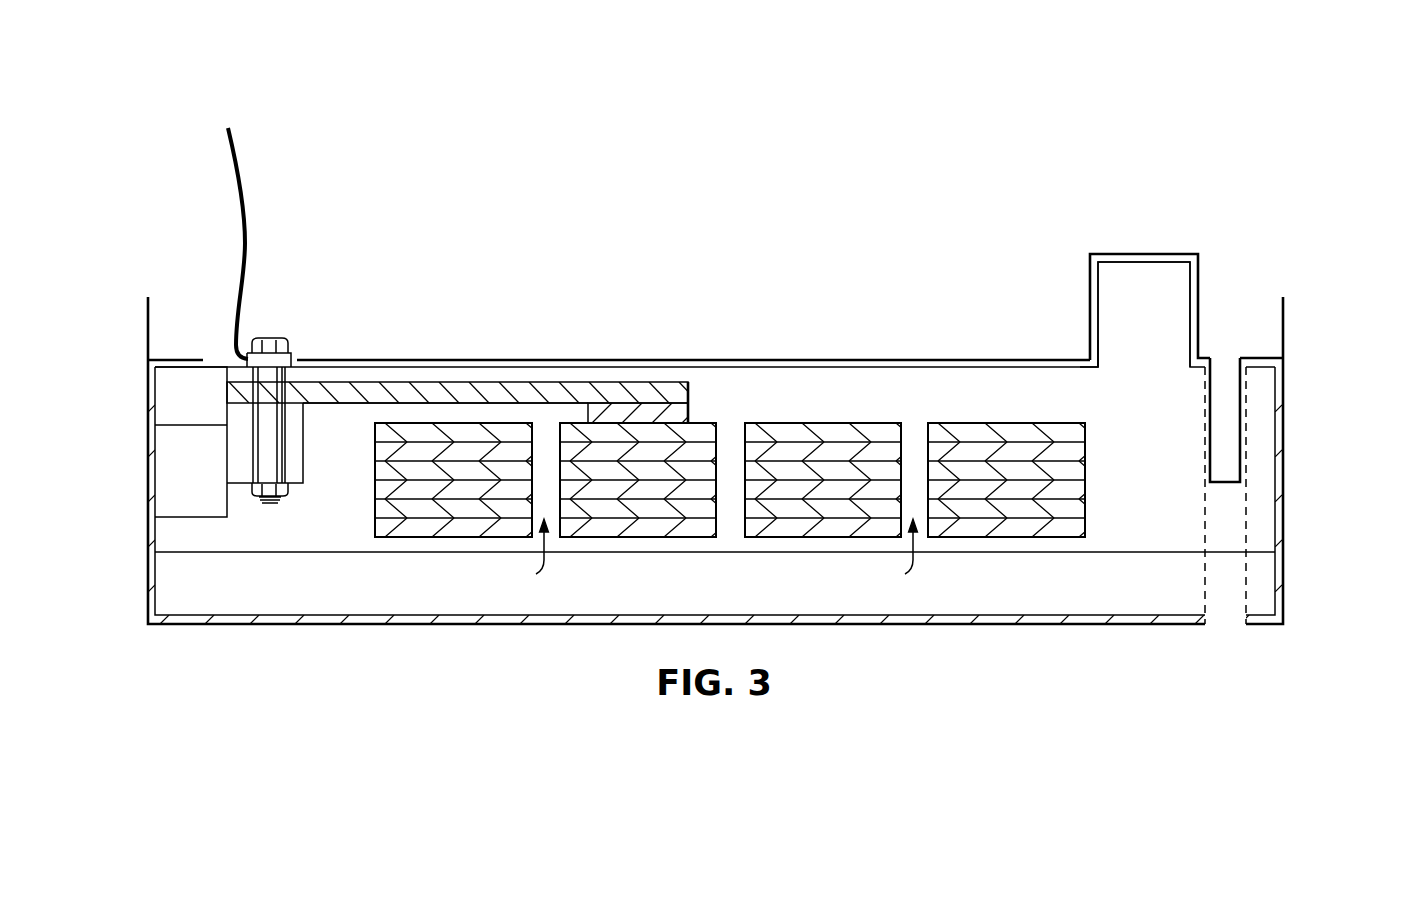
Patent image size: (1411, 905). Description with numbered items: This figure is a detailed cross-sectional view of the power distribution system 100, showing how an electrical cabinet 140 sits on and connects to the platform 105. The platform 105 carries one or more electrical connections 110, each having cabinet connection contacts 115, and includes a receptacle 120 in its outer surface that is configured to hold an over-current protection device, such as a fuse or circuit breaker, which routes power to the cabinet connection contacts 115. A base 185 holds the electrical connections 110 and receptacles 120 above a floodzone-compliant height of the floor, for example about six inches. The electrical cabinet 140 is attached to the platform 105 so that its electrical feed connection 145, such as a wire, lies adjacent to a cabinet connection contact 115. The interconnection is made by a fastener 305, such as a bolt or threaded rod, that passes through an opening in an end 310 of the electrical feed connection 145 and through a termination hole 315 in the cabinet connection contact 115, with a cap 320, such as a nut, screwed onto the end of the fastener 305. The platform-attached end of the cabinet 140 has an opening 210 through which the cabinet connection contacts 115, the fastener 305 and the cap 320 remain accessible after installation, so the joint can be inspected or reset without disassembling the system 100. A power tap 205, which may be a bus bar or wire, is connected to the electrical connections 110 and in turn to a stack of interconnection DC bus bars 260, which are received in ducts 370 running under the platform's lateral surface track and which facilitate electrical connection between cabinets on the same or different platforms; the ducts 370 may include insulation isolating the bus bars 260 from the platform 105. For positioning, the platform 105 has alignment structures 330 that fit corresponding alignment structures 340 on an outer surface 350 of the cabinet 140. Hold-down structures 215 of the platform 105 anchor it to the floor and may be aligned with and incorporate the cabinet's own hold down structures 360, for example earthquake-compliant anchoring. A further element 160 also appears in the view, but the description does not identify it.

The power distribution system 100 is at (985, 142).
The platform 105 is at (1326, 550).
The electrical connections 110 is at (303, 455).
The cabinet connection contacts 115 is at (322, 304).
The receptacle 120 is at (160, 478).
The electrical cabinet 140 is at (1284, 322).
The electrical feed connection 145 is at (243, 177).
The bus bar support 160 is at (303, 410).
The base 185 is at (242, 597).
The power tap 205 is at (690, 392).
The opening 210 is at (213, 348).
The hold-down structures 215 is at (1205, 575).
The interconnection DC bus bars 260 is at (800, 432).
The fastener 305 is at (290, 495).
The end of electrical feed connection 310 is at (268, 340).
The termination hole 315 is at (250, 432).
The cap 320 is at (292, 353).
The alignment structures 330 is at (1122, 328).
The alignment structures 340 is at (1140, 254).
The outer surface 350 is at (1090, 370).
The hold down structures 360 is at (1240, 462).
The duct 370 is at (729, 561).